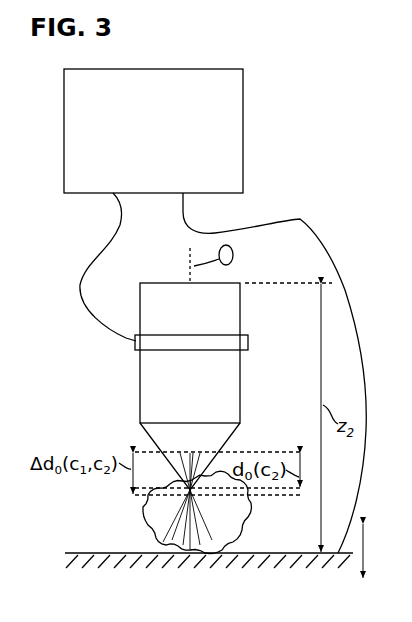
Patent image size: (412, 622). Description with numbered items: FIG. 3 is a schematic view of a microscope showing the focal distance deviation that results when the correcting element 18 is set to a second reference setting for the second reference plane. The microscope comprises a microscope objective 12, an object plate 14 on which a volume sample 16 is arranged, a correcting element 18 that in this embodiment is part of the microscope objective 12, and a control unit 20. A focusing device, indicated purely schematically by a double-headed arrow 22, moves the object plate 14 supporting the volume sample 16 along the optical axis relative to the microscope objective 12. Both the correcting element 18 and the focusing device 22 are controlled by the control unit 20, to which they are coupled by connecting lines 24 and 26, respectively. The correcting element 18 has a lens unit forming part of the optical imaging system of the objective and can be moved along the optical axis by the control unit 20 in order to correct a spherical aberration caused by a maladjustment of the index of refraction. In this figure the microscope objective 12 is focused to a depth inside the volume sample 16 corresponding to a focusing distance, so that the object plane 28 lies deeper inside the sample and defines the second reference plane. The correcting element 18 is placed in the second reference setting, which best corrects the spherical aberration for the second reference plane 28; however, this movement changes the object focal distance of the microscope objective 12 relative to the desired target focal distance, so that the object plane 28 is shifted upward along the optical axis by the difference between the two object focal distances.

The microscope objective 12 is at (138, 302).
The object plate 14 is at (86, 552).
The volume sample 16 is at (145, 515).
The correcting element 18 is at (139, 350).
The control unit 20 is at (244, 107).
The focusing device 22 is at (365, 548).
The connecting line 24 is at (120, 226).
The connecting line 26 is at (300, 219).
The object plane 28 is at (274, 496).